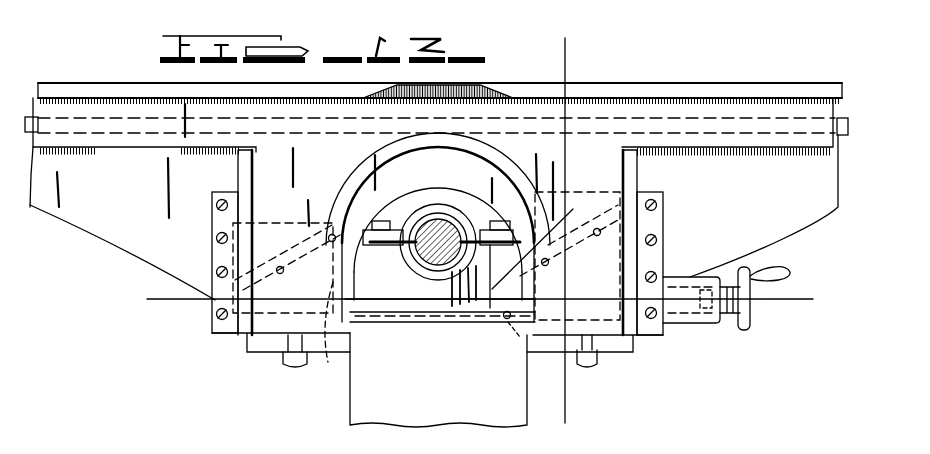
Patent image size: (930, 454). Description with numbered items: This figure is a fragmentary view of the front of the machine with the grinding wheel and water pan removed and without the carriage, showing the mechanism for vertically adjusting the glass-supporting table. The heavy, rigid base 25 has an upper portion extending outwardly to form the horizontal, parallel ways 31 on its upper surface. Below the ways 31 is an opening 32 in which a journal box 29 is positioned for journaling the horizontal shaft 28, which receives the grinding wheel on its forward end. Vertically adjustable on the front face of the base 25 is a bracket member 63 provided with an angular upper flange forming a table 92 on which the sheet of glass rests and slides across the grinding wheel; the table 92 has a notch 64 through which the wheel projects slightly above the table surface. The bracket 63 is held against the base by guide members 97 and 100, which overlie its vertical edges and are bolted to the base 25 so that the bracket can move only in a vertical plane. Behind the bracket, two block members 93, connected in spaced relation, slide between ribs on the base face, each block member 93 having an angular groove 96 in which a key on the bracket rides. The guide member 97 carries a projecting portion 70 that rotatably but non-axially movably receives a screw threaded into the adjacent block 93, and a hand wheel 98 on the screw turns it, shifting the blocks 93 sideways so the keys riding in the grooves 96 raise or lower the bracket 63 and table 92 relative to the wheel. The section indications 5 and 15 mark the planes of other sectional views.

The ways 31 is at (30, 117).
The table 92 is at (714, 87).
The notch 64 is at (467, 90).
The base 25 is at (769, 197).
The bracket member 63 is at (437, 242).
The guide member 100 is at (222, 297).
The journal box 29 is at (438, 227).
The opening 32 is at (413, 197).
The horizontal shaft 28 is at (417, 251).
The block member 93 is at (313, 367).
The groove 96 is at (490, 292).
The guide member 97 is at (657, 327).
The projecting portion 70 is at (717, 323).
The hand wheel 98 is at (752, 322).
The section line 5 is at (813, 297).
The section line 15 is at (565, 423).